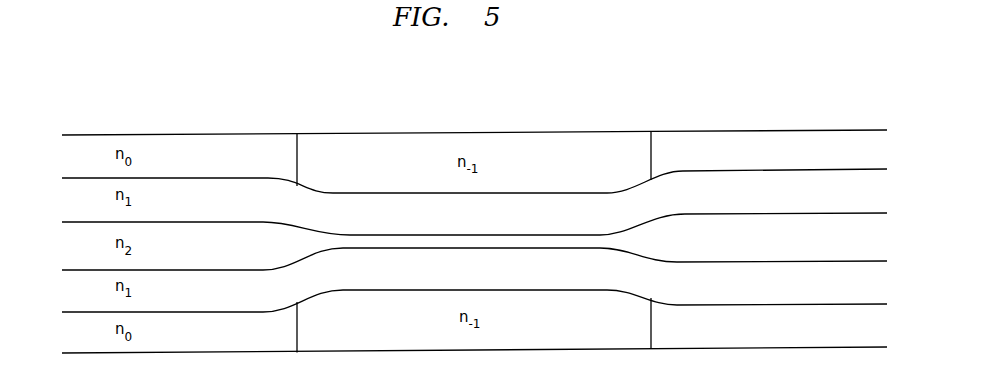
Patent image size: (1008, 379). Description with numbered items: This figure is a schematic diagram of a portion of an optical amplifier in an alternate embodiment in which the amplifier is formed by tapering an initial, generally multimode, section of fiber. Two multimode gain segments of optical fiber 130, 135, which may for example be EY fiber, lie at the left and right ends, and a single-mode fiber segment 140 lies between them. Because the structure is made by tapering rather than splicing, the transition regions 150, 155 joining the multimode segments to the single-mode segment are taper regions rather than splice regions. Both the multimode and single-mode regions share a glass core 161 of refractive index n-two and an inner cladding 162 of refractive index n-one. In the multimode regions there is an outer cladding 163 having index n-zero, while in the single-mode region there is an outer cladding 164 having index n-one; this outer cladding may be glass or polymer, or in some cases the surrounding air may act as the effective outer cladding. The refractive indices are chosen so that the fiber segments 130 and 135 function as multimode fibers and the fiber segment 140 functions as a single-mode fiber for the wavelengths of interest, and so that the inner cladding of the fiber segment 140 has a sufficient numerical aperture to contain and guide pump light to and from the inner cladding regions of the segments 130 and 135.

The multimode gain segment of optical fiber 130 is at (158, 134).
The multimode gain segment of optical fiber 135 is at (800, 129).
The single-mode fiber segment 140 is at (487, 131).
The transition region 150 is at (347, 123).
The transition region 155 is at (690, 120).
The glass core 161 is at (792, 250).
The inner cladding 162 is at (792, 206).
The outer cladding 163 is at (792, 163).
The outer cladding 164 is at (593, 165).